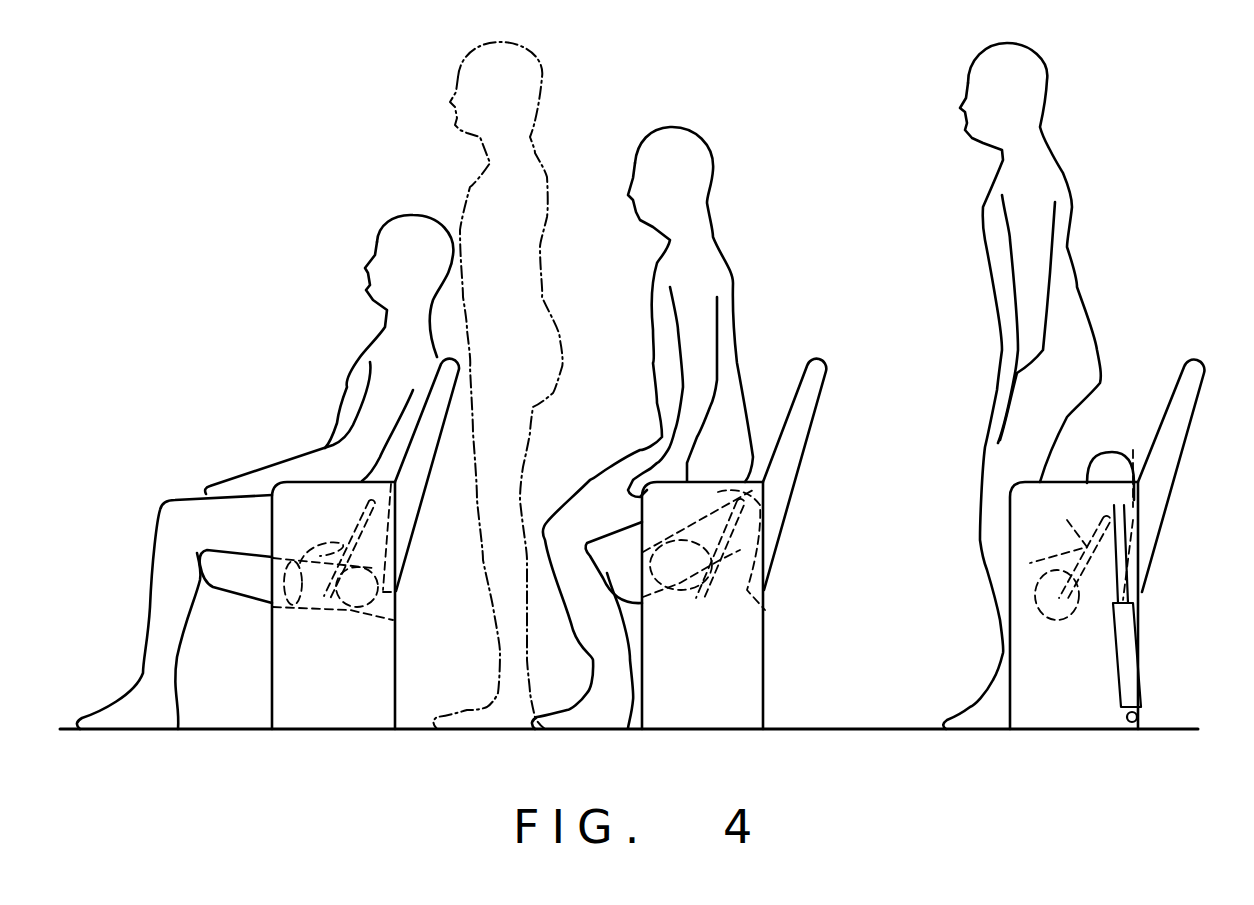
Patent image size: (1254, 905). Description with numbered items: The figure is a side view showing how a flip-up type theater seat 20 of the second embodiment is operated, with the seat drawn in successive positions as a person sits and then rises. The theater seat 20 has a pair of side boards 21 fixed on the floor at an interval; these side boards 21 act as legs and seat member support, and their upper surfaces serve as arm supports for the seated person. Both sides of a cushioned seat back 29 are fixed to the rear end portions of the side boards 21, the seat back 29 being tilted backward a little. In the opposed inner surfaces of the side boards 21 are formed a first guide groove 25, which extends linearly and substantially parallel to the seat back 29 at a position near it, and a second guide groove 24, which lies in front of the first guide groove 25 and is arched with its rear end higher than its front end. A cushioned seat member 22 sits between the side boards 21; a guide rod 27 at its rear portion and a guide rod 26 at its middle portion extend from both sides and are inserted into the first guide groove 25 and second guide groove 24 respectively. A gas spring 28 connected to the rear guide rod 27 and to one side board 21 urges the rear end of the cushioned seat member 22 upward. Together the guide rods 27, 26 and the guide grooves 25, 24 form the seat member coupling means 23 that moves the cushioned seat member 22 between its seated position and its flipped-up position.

The theater seat 20 is at (262, 510).
The side boards 21 is at (282, 688).
The cushioned seat member 22 is at (227, 583).
The seat member coupling means 23 is at (357, 627).
The second guide groove 24 is at (300, 607).
The first guide groove 25 is at (370, 603).
The guide rod 26 is at (287, 613).
The guide rod 27 is at (337, 613).
The gas spring 28 is at (1115, 660).
The cushioned seat back 29 is at (417, 497).